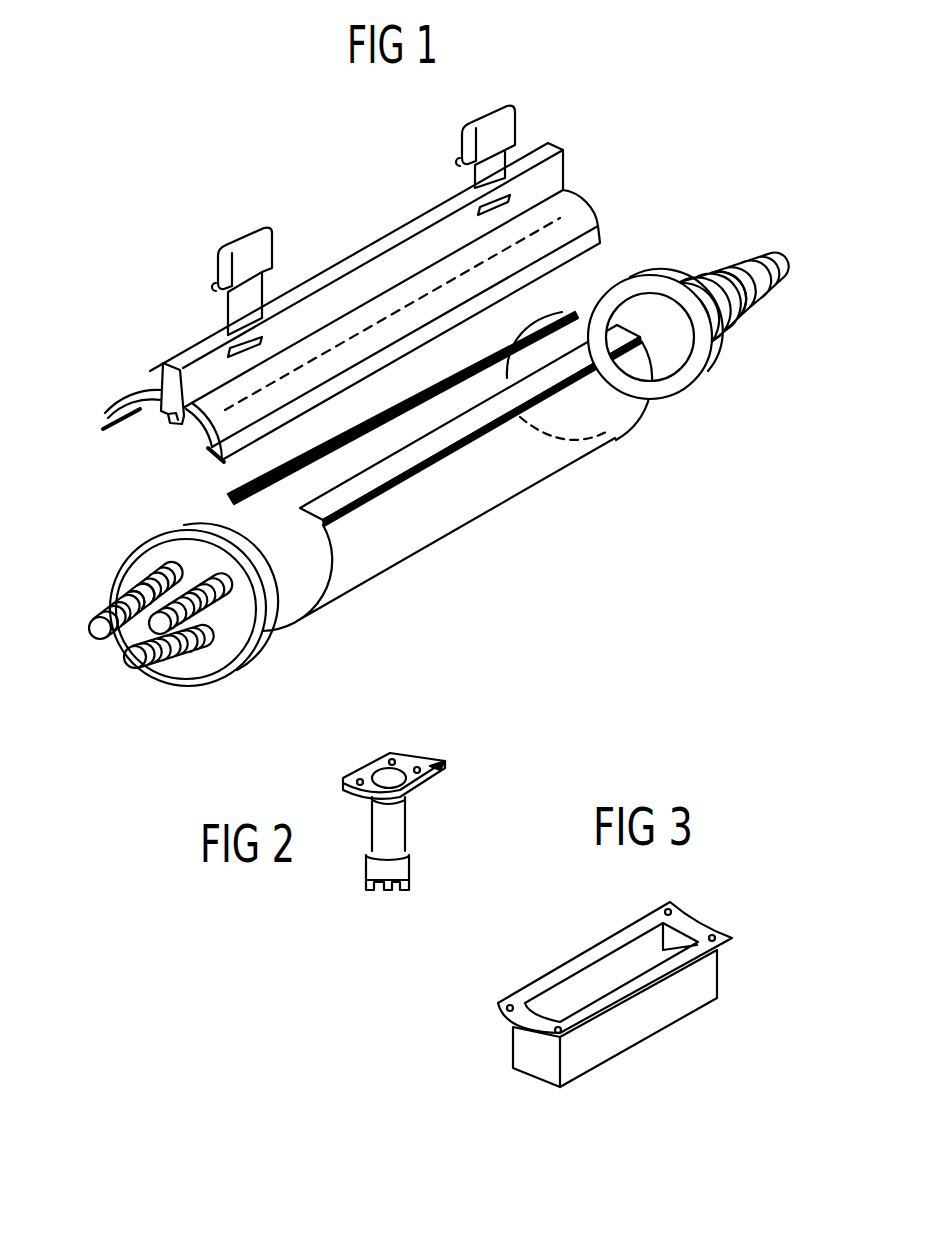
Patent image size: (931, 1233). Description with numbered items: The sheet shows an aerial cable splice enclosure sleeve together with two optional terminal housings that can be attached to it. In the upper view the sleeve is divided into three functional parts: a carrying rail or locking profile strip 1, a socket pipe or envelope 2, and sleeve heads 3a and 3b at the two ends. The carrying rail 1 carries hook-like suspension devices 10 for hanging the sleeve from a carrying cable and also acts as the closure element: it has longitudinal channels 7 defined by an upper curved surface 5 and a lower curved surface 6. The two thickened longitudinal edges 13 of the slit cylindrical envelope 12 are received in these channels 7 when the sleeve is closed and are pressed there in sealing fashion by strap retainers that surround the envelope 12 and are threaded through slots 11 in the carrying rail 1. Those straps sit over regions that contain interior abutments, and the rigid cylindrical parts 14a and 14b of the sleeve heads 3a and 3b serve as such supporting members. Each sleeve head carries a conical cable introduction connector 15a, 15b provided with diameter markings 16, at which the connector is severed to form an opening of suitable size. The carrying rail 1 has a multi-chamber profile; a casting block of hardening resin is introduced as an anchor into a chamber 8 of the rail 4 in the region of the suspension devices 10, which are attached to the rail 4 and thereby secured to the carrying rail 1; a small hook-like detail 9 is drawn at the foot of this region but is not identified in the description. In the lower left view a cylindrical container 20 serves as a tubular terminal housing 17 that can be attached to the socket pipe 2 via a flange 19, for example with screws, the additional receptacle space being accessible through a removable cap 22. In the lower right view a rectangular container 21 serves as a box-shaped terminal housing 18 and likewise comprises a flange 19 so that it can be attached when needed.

In FIG. 1, the carrying rail 1 is at (366, 295).
In FIG. 1, the socket pipe 2 is at (440, 458).
In FIG. 1, the sleeve head 3a is at (183, 626).
In FIG. 1, the sleeve head 3b is at (691, 348).
In FIG. 1, the rail 4 is at (552, 178).
In FIG. 1, the upper curved surface 5 is at (587, 222).
In FIG. 1, the lower curved surface 6 is at (555, 258).
In FIG. 1, the longitudinal channels 7 is at (124, 414).
In FIG. 1, the chamber 8 is at (178, 382).
In FIG. 1, the hook 9 is at (171, 418).
In FIG. 1, the suspension devices 10 is at (243, 243).
In FIG. 1, the slots 11 is at (242, 343).
In FIG. 1, the slit cylindrical envelope 12 is at (604, 426).
In FIG. 1, the thickened longitudinal edges 13 is at (518, 335).
In FIG. 1, the cylindrical part 14a is at (176, 540).
In FIG. 1, the cylindrical part 14b is at (685, 380).
In FIG. 1, the conical cable introduction connector 15a is at (133, 662).
In FIG. 1, the conical cable introduction connector 15b is at (743, 302).
In FIG. 1, the diameter markings 16 is at (145, 583).
In FIG. 2, the terminal housing 17 is at (390, 817).
In FIG. 3, the terminal housing 18 is at (607, 994).
In FIG. 2, the flange 19 is at (437, 765).
In FIG. 3, the flange 19 is at (527, 1018).
In FIG. 2, the cylindrical container 20 is at (393, 770).
In FIG. 3, the rectangular container 21 is at (582, 985).
In FIG. 2, the cap 22 is at (372, 868).